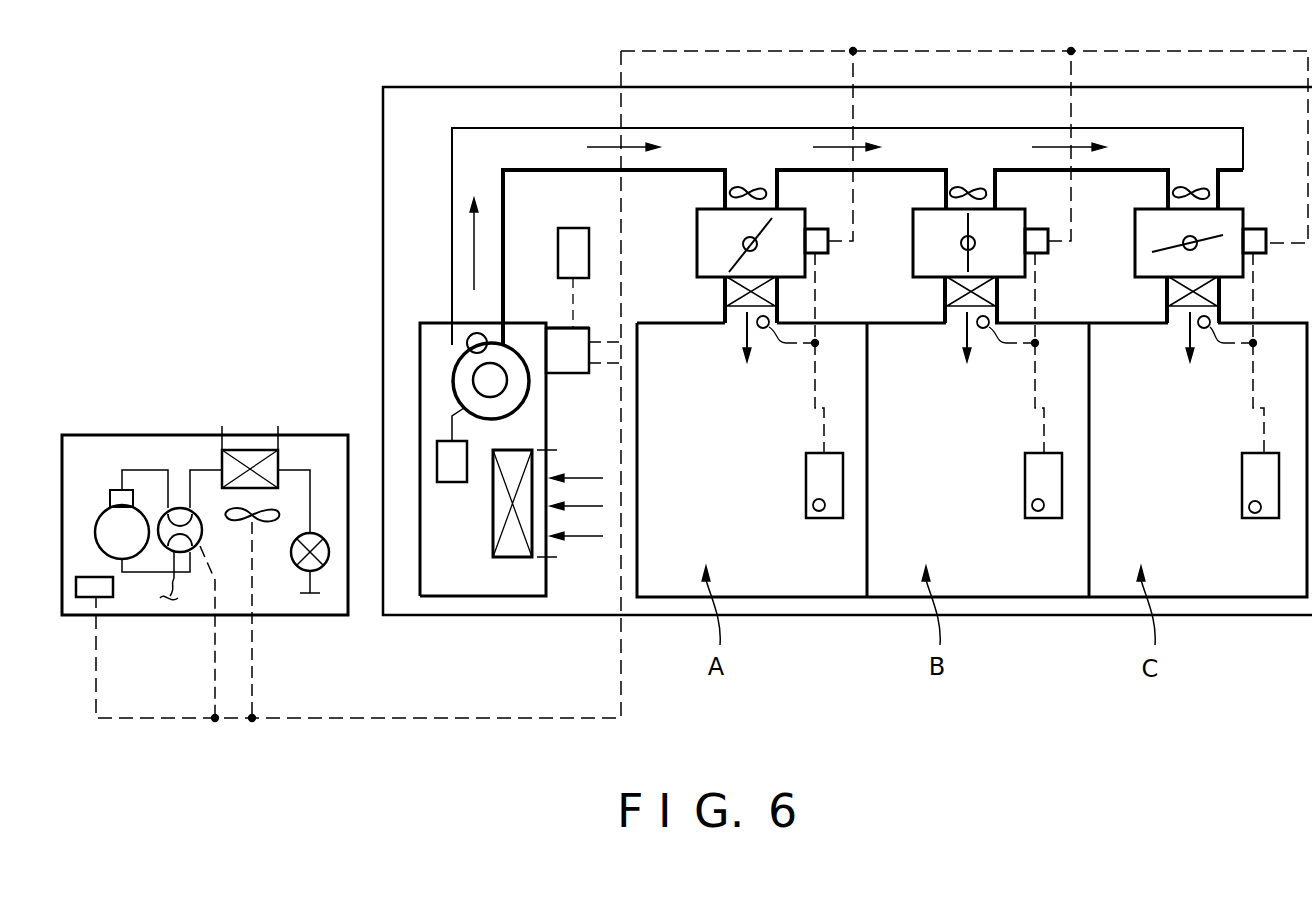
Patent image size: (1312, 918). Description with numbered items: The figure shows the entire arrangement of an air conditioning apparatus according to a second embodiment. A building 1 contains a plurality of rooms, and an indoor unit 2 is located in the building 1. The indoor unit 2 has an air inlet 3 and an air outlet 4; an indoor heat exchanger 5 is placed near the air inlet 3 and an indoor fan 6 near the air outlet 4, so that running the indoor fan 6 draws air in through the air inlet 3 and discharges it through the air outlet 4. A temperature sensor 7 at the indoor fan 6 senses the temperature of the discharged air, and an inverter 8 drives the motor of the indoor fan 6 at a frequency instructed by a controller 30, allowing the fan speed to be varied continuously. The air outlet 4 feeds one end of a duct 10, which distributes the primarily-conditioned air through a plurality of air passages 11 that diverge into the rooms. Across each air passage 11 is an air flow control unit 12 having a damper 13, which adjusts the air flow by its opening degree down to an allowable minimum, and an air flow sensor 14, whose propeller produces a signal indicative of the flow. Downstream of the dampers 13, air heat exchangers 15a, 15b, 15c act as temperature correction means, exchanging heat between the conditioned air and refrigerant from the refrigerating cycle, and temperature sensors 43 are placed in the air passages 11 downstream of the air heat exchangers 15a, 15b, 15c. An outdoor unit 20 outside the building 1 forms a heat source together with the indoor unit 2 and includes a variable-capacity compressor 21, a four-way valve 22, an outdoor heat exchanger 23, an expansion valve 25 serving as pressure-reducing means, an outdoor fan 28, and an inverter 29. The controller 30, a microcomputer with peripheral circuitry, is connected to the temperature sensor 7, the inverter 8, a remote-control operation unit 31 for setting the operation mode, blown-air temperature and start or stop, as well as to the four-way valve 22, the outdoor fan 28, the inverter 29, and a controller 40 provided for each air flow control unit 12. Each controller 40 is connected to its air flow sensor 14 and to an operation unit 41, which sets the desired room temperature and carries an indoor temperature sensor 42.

The building 1 is at (462, 87).
The indoor unit 2 is at (420, 505).
The air inlet 3 is at (548, 548).
The air outlet 4 is at (493, 437).
The indoor heat exchanger 5 is at (492, 530).
The indoor fan 6 is at (520, 406).
The temperature sensor 7 is at (467, 343).
The inverter 8 is at (452, 482).
The duct 10 is at (500, 128).
The air passages 11 is at (953, 274).
The air flow control unit 12 is at (1138, 233).
The damper 13 is at (1175, 250).
The air flow sensor 14 is at (1169, 190).
The air heat exchanger 15a is at (737, 320).
The air heat exchanger 15b is at (957, 320).
The air heat exchanger 15c is at (1177, 320).
The outdoor unit 20 is at (153, 435).
The variable-capacity compressor 21 is at (104, 512).
The four-way valve 22 is at (204, 532).
The outdoor heat exchanger 23 is at (282, 456).
The expansion valve 25 is at (322, 537).
The outdoor fan 28 is at (266, 525).
The inverter 29 is at (95, 577).
The controller 30 is at (575, 373).
The remote-control operation unit 31 is at (558, 238).
The controller 40 is at (1278, 266).
The operation unit 41 is at (1242, 464).
The indoor temperature sensor 42 is at (1252, 535).
The temperature sensor 43 is at (1213, 358).